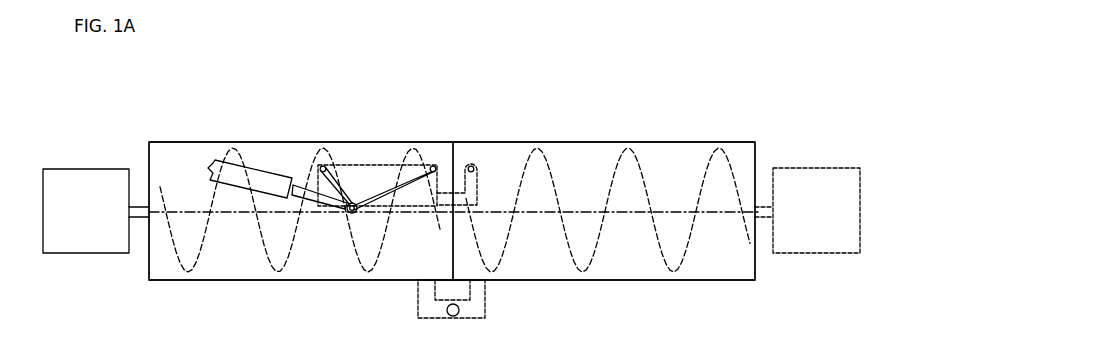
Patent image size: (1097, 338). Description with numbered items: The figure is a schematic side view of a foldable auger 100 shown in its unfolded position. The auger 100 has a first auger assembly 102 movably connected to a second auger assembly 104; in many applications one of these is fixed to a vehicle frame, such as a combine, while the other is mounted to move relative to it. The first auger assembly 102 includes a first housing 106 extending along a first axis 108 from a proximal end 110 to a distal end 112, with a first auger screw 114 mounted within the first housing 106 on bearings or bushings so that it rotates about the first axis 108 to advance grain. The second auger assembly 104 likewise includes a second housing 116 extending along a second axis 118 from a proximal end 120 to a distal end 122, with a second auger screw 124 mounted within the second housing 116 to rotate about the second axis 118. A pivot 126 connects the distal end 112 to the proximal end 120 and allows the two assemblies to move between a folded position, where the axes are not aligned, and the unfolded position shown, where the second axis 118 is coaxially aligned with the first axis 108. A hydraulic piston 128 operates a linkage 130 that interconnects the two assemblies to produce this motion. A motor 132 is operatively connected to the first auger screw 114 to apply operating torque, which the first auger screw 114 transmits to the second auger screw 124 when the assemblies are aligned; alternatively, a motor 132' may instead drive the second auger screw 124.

The foldable auger 100 is at (718, 85).
The first auger assembly 102 is at (170, 142).
The second auger assembly 104 is at (687, 142).
The first housing 106 is at (192, 155).
The first axis 108 is at (396, 277).
The proximal end 110 is at (149, 262).
The distal end 112 is at (437, 142).
The first auger screw 114 is at (263, 242).
The second housing 116 is at (595, 163).
The second axis 118 is at (503, 178).
The proximal end 120 is at (465, 142).
The distal end 122 is at (755, 263).
The second auger screw 124 is at (663, 258).
The pivot 126 is at (458, 316).
The hydraulic piston 128 is at (277, 172).
The linkage 130 is at (352, 178).
The motor 132 is at (86, 186).
The motor 132' is at (814, 175).